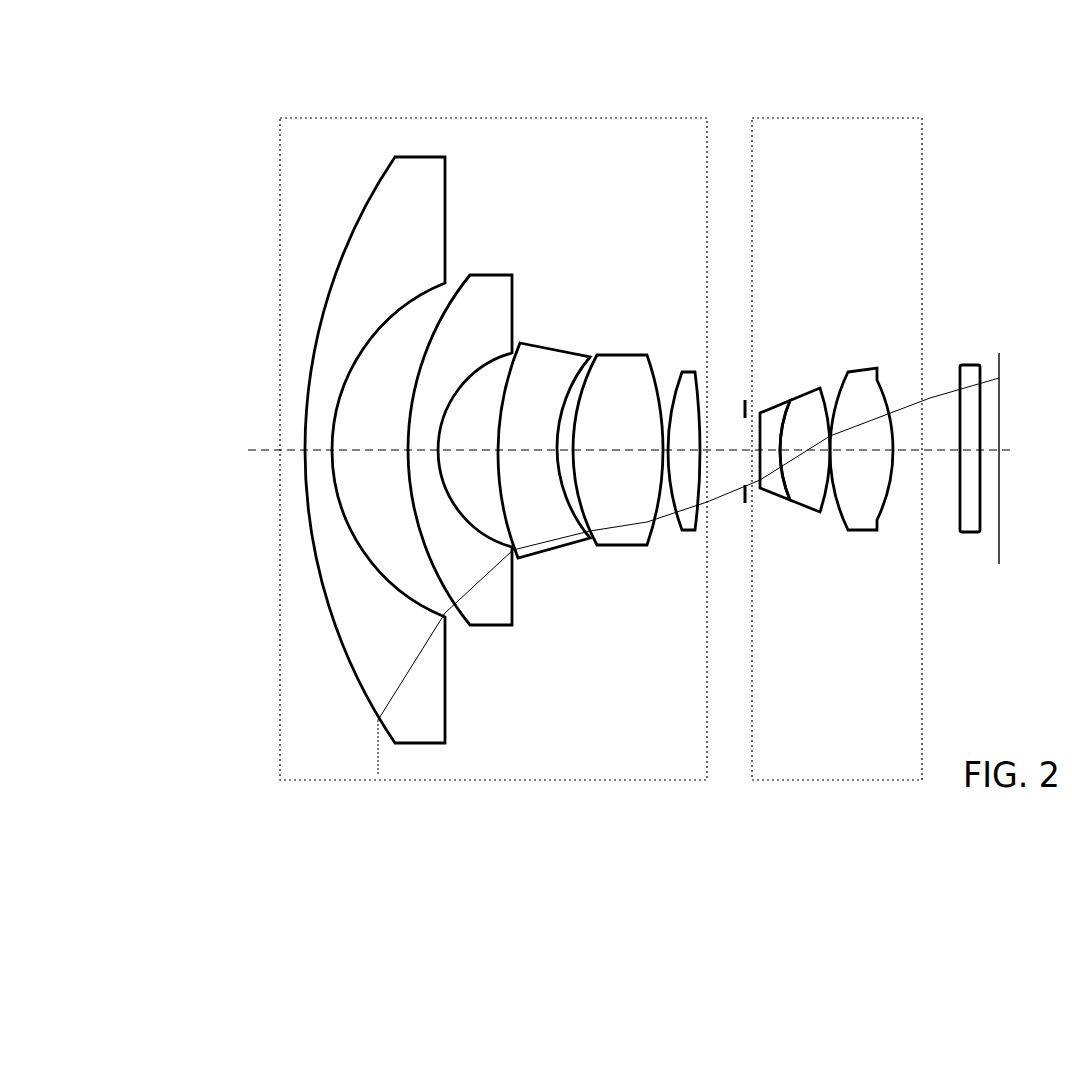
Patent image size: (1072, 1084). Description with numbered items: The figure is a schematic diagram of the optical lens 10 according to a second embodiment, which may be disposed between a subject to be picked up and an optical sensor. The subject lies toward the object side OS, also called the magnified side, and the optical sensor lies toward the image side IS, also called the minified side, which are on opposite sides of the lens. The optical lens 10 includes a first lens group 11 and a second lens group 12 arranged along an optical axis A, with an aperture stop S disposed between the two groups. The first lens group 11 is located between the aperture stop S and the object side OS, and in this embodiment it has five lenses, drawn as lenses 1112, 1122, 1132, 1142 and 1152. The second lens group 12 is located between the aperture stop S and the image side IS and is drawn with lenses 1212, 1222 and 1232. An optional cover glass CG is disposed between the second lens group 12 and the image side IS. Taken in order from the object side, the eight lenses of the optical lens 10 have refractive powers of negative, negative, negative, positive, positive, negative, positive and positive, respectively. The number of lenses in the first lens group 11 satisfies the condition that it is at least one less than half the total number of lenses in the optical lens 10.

The optical lens 10 is at (963, 189).
The first lens group 11 is at (435, 118).
The second lens group 12 is at (768, 118).
The first lens 1112 is at (451, 160).
The second lens 1122 is at (490, 275).
The third lens 1132 is at (557, 343).
The fourth lens 1142 is at (625, 547).
The fifth lens 1152 is at (683, 371).
The sixth lens 1212 is at (777, 496).
The seventh lens 1222 is at (821, 388).
The eighth lens 1232 is at (873, 368).
The aperture stop S is at (745, 506).
The cover glass CG is at (968, 365).
The image side IS is at (1016, 458).
The object side OS is at (611, 450).
The optical axis A is at (947, 452).